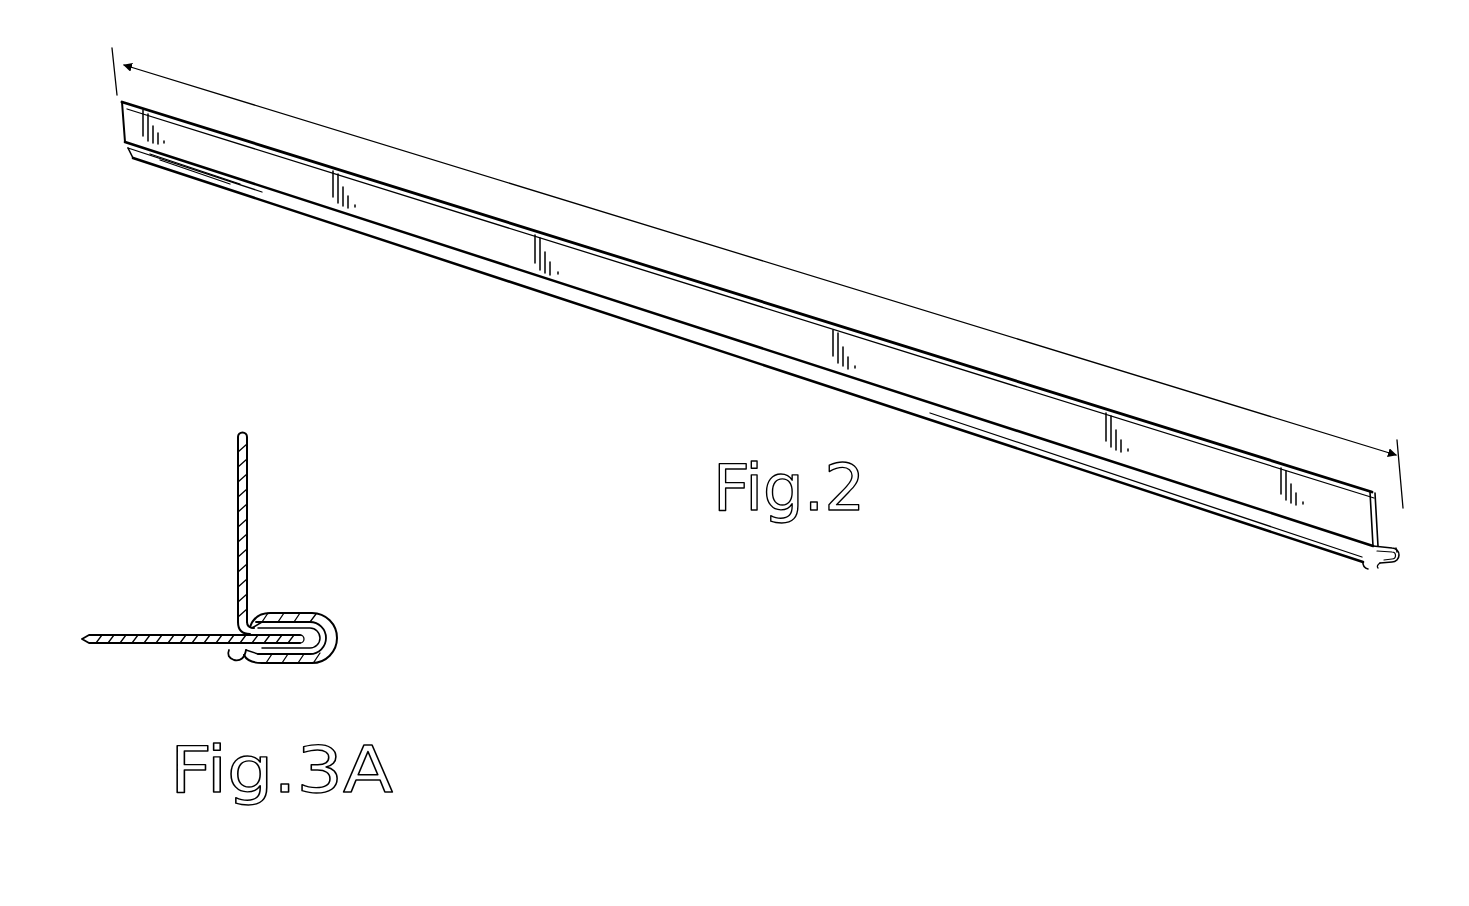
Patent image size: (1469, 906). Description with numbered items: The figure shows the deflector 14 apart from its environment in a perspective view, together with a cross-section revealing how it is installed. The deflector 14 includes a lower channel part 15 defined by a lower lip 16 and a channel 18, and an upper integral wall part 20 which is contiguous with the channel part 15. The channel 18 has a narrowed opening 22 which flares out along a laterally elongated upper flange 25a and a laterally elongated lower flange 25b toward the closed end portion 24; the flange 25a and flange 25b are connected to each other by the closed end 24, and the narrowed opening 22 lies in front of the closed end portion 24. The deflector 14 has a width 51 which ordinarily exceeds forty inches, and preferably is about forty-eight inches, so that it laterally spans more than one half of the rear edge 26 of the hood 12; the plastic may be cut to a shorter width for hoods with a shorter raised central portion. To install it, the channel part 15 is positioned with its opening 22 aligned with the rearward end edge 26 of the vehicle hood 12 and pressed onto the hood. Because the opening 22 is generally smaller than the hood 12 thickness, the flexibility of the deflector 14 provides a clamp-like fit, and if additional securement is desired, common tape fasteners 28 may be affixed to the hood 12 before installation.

In FIG. 3A, the hood 12 is at (144, 635).
In FIG. 2, the deflector 14 is at (788, 361).
In FIG. 2, the lower channel part 15 is at (1398, 540).
In FIG. 2, the lower lip 16 is at (1366, 570).
In FIG. 2, the channel 18 is at (1396, 566).
In FIG. 2, the upper integral wall part 20 is at (1260, 466).
In FIG. 3A, the upper integral wall part 20 is at (249, 515).
In FIG. 2, the narrowed opening 22 is at (1297, 533).
In FIG. 3A, the narrowed opening 22 is at (224, 648).
In FIG. 2, the closed end portion 24 is at (1405, 549).
In FIG. 3A, the closed end portion 24 is at (323, 633).
In FIG. 3A, the upper flange 25a is at (287, 608).
In FIG. 3A, the lower flange 25b is at (310, 667).
In FIG. 3A, the rear edge of hood 26 is at (341, 625).
In FIG. 3A, the tape fasteners 28 is at (329, 608).
In FIG. 2, the width 51 is at (827, 282).